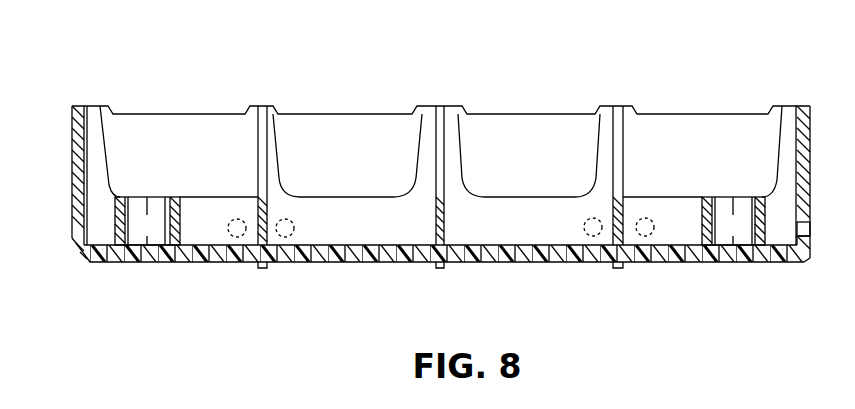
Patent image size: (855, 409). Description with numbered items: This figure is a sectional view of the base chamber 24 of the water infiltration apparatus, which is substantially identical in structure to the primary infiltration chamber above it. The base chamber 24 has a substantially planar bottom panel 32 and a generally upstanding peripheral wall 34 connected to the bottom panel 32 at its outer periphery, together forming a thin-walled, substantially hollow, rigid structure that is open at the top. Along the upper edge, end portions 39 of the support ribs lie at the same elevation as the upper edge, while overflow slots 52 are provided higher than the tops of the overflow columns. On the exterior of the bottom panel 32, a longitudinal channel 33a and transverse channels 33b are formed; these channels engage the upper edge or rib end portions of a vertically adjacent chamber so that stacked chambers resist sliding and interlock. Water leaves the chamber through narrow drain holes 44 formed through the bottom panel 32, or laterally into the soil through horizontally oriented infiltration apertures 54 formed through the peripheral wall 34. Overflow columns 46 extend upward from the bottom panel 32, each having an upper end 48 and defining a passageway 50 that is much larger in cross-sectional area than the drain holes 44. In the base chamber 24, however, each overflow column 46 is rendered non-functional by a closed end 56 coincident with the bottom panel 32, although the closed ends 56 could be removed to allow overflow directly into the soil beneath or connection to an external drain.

The base chamber 24 is at (146, 80).
The bottom panel 32 is at (107, 262).
The longitudinal channel 33a is at (783, 262).
The transverse channel 33b is at (618, 268).
The peripheral wall 34 is at (70, 124).
The end portions of the support ribs 39 is at (106, 108).
The drain holes 44 is at (238, 262).
The overflow column 46 is at (180, 197).
The upper end of the overflow column 48 is at (145, 197).
The passageway 50 is at (138, 233).
The overflow slots 52 is at (168, 112).
The infiltration apertures 54 is at (231, 220).
The closed end 56 is at (130, 196).